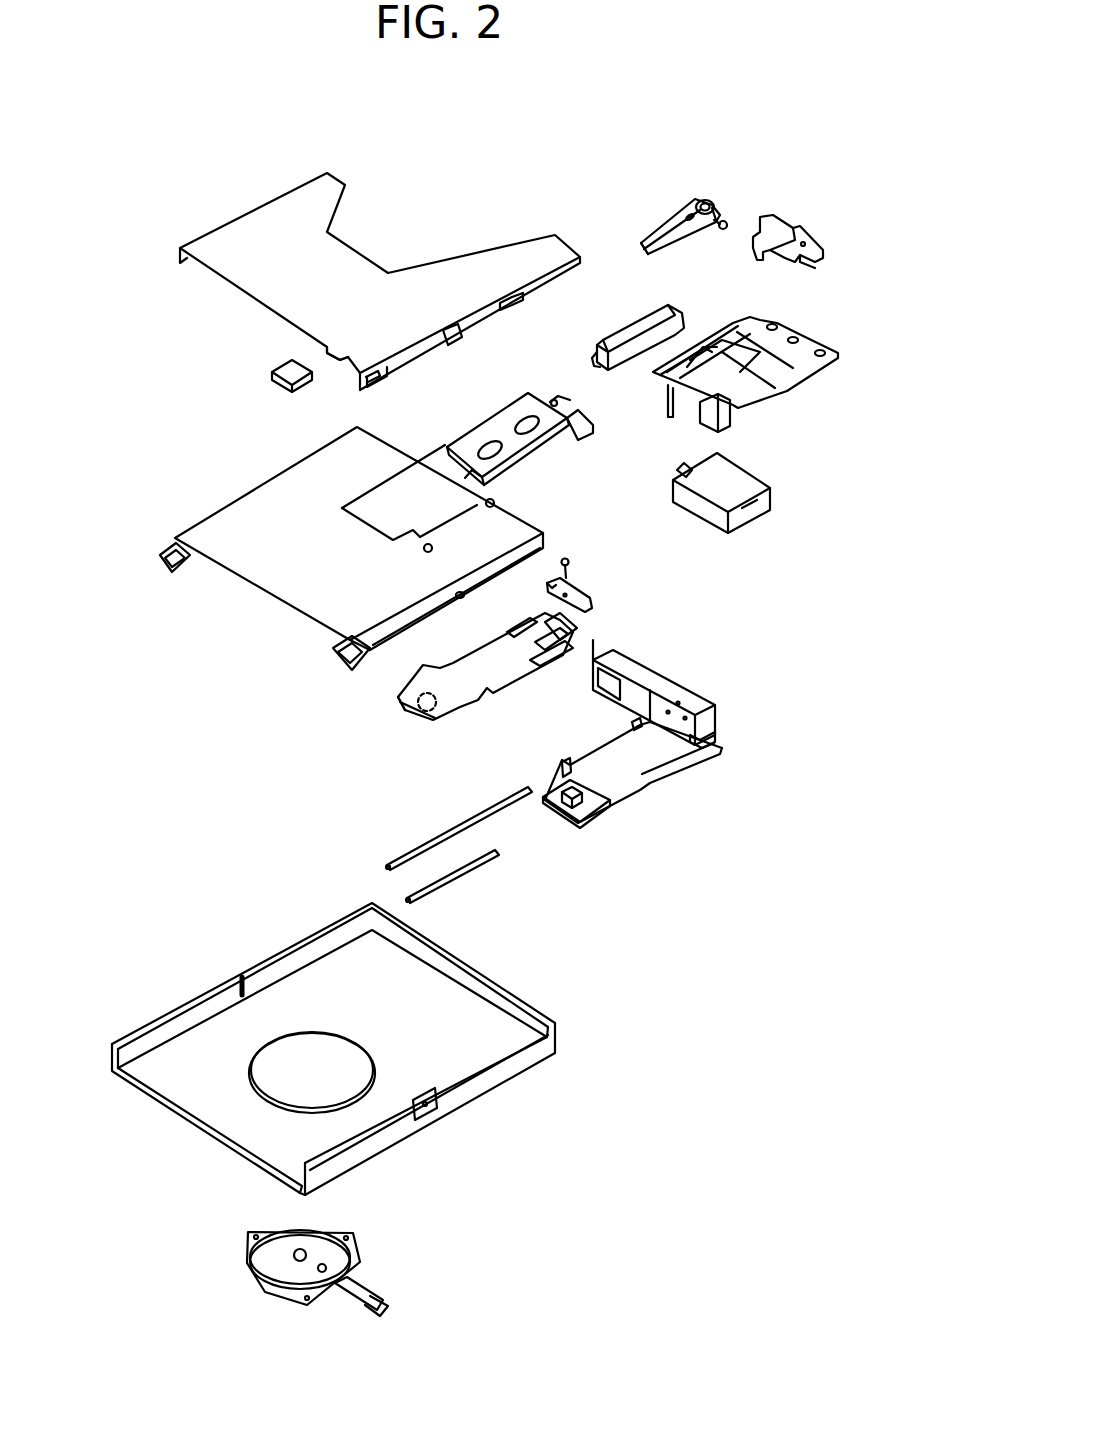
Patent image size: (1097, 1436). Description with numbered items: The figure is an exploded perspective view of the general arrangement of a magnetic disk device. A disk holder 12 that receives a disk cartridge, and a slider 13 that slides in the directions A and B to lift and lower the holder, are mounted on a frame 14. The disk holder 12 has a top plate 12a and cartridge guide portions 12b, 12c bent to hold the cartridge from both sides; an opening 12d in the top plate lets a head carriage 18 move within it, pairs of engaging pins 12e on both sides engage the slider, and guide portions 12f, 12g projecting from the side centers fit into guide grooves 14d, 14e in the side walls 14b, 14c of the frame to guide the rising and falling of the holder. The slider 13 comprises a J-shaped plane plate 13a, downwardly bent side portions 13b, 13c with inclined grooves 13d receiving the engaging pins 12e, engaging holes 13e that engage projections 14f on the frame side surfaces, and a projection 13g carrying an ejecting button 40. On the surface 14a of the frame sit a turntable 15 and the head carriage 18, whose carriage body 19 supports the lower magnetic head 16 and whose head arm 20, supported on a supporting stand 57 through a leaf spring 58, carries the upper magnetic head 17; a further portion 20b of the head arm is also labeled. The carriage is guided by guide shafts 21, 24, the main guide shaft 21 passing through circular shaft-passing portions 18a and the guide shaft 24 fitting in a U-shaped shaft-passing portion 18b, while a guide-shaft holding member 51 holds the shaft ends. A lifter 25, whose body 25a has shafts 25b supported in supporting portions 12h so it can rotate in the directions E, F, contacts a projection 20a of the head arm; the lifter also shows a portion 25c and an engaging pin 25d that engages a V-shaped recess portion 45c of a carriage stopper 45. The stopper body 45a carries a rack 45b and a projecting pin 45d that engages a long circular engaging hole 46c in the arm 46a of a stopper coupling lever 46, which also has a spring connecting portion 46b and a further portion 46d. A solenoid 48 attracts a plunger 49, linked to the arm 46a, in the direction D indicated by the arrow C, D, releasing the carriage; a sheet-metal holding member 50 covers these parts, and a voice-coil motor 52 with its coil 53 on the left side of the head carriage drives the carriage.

The disk holder 12 is at (353, 539).
The top plate 12a is at (285, 600).
The cartridge guide portion 12b is at (170, 545).
The cartridge guide portion 12c is at (420, 618).
The opening 12d is at (395, 480).
The engaging pins 12e is at (345, 648).
The guide portion 12f is at (275, 480).
The guide portion 12g is at (470, 598).
The supporting portions 12h is at (492, 503).
The slider 13 is at (350, 296).
The plane plate 13a is at (262, 290).
The side portion 13b is at (180, 258).
The side portion 13c is at (520, 298).
The inclined grooves 13d is at (503, 310).
The engaging holes 13e is at (460, 345).
The projection 13g is at (322, 352).
The frame 14 is at (377, 1049).
The surface 14a is at (225, 1122).
The side wall 14b is at (280, 965).
The side wall 14c is at (475, 1085).
The guide groove 14d is at (240, 975).
The guide groove 14e is at (422, 1093).
The projections 14f is at (430, 1108).
The turntable 15 is at (345, 1252).
The lower magnetic head 16 is at (566, 810).
The upper magnetic head 17 is at (418, 706).
The head carriage 18 is at (609, 782).
The shaft-passing portions 18a is at (630, 726).
The shaft-passing portion 18b is at (712, 742).
The carriage body 19 is at (670, 765).
The head arm 20 is at (478, 685).
The projection 20a is at (480, 710).
The lever fingers 20b is at (552, 660).
The main guide shaft 21 is at (455, 828).
The guide shaft 24 is at (465, 878).
The lifter 25 is at (555, 455).
The body 25a is at (560, 450).
The shafts 25b is at (575, 420).
The slider top 25c is at (487, 433).
The engaging pin 25d is at (553, 400).
The ejecting button 40 is at (270, 378).
The carriage stopper 45 is at (607, 334).
The body 45a is at (665, 315).
The rack 45b is at (638, 318).
The V-shaped recess portion 45c is at (590, 362).
The projecting pin 45d is at (720, 325).
The stopper coupling lever 46 is at (692, 202).
The arm 46a is at (665, 218).
The spring connecting portion 46b is at (728, 222).
The long circular engaging hole 46c is at (712, 228).
The arm tip 46d is at (640, 250).
The solenoid 48 is at (726, 488).
The plunger 49 is at (676, 478).
The holding member 50 is at (757, 350).
The guide-shaft holding member 51 is at (790, 230).
The voice-coil motor 52 is at (693, 686).
The coil 53 is at (655, 655).
The supporting stand 57 is at (718, 708).
The leaf spring 58 is at (577, 628).
The direction A is at (483, 1158).
The direction B is at (494, 1159).
The direction C is at (615, 970).
The direction D is at (624, 978).
The direction E is at (448, 468).
The direction F is at (437, 452).